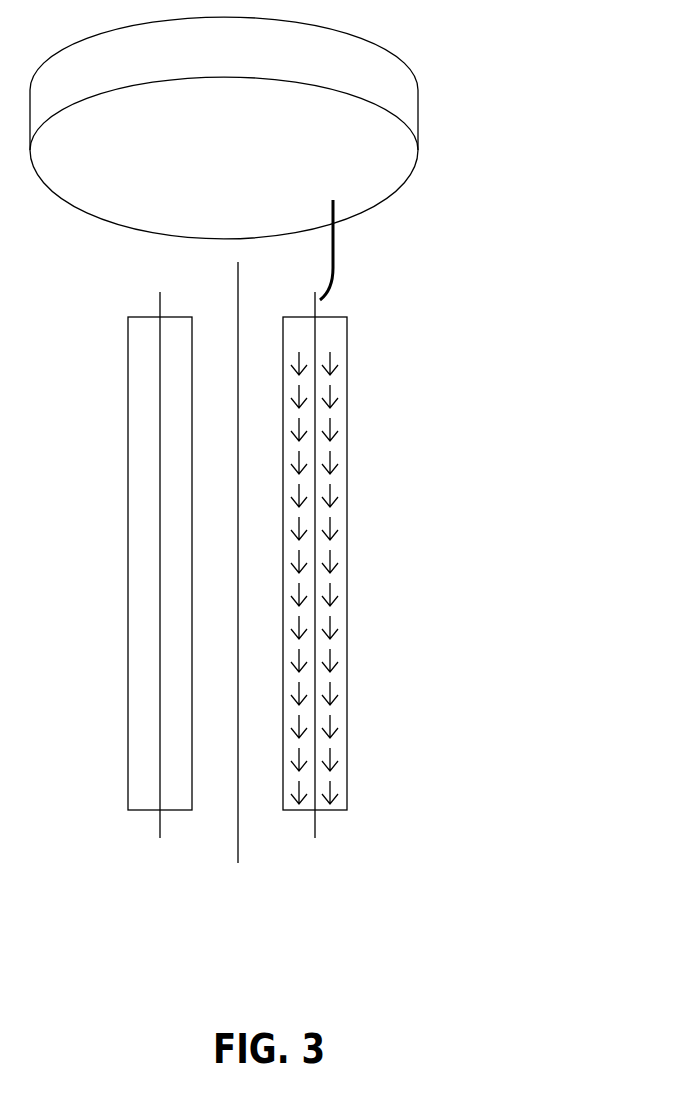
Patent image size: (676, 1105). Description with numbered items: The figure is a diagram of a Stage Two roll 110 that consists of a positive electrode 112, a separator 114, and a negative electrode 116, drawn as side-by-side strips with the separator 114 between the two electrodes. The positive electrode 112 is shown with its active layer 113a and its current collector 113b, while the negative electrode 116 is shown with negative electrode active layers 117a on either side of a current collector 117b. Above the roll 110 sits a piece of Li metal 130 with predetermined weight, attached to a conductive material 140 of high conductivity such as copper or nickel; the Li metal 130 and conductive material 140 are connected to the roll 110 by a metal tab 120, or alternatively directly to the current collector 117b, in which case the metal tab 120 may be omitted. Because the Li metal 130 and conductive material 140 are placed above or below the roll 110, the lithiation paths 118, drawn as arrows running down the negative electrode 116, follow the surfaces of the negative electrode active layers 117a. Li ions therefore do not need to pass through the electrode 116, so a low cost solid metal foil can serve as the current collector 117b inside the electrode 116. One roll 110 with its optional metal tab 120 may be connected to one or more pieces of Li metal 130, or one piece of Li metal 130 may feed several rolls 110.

The roll 110 is at (329, 598).
The positive electrode 112 is at (110, 592).
The positive electrode active layer 113a is at (172, 433).
The current collector of positive electrode 113b is at (160, 300).
The separator 114 is at (238, 838).
The negative electrode 116 is at (373, 597).
The negative electrode active layers 117a is at (297, 337).
The current collector 117b is at (313, 828).
The lithiation paths 118 is at (378, 578).
The metal tab 120 is at (335, 256).
The piece of Li metal 130 is at (393, 80).
The conductive material 140 is at (275, 125).